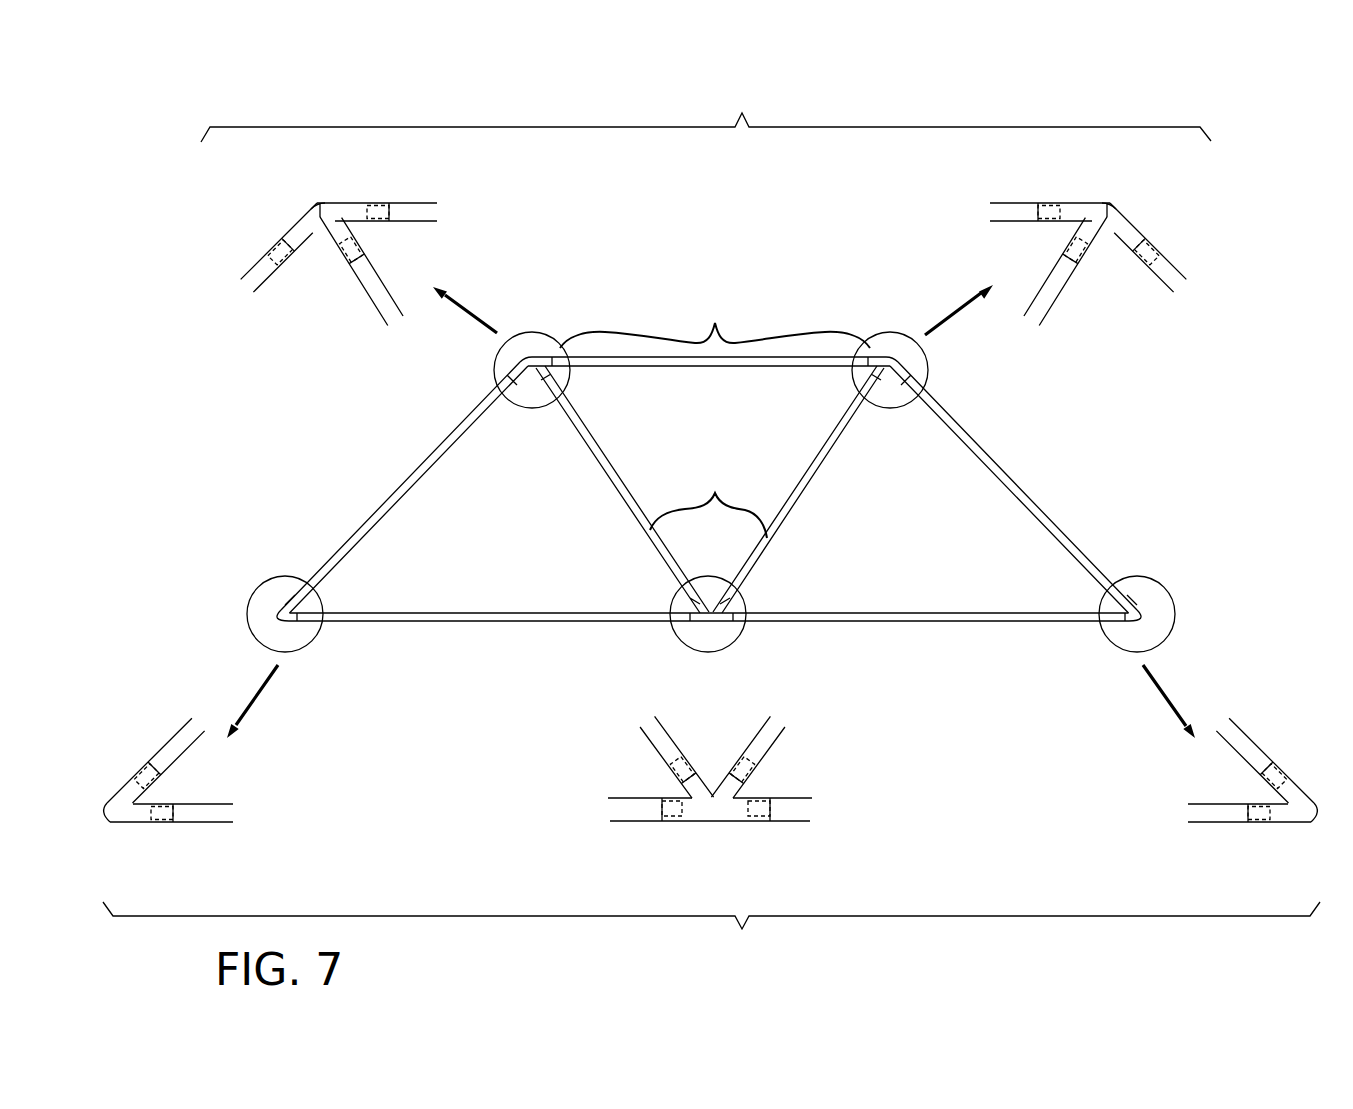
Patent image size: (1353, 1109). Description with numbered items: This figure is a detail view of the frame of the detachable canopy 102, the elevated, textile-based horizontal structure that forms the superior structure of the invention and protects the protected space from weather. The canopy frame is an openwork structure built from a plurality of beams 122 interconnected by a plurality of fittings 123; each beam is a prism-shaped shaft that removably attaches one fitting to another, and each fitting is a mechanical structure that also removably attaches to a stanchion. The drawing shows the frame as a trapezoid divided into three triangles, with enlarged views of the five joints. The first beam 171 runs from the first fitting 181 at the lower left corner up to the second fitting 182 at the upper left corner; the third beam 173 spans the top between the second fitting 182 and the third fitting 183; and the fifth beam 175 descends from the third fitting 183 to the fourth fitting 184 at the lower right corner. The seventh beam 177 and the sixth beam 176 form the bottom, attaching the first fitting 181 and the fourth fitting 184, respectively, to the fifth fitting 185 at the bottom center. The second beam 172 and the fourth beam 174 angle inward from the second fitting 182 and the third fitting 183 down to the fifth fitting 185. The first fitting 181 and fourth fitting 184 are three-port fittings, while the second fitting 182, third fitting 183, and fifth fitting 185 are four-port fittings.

The detachable canopy 102 is at (133, 162).
The plurality of beams 122 is at (708, 500).
The plurality of fittings 123 is at (711, 523).
The first beam 171 is at (412, 478).
The second beam 172 is at (594, 455).
The third beam 173 is at (650, 363).
The fourth beam 174 is at (796, 492).
The fifth beam 175 is at (1020, 490).
The sixth beam 176 is at (912, 620).
The seventh beam 177 is at (534, 620).
The first fitting 181 is at (103, 815).
The second fitting 182 is at (318, 215).
The third fitting 183 is at (1110, 203).
The fourth fitting 184 is at (1310, 812).
The fifth fitting 185 is at (712, 796).